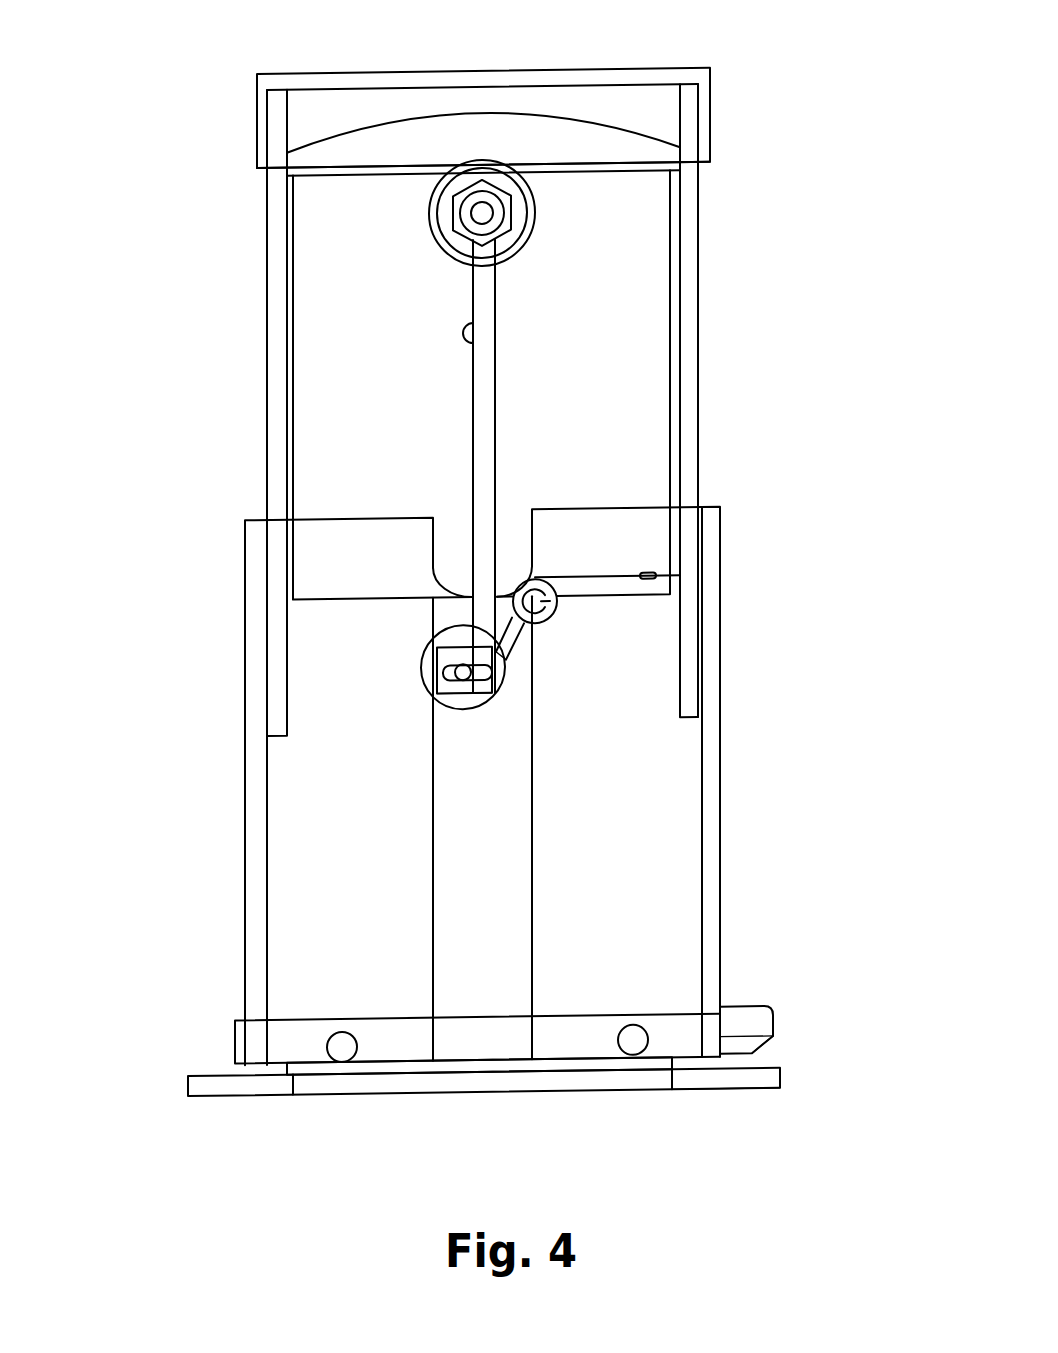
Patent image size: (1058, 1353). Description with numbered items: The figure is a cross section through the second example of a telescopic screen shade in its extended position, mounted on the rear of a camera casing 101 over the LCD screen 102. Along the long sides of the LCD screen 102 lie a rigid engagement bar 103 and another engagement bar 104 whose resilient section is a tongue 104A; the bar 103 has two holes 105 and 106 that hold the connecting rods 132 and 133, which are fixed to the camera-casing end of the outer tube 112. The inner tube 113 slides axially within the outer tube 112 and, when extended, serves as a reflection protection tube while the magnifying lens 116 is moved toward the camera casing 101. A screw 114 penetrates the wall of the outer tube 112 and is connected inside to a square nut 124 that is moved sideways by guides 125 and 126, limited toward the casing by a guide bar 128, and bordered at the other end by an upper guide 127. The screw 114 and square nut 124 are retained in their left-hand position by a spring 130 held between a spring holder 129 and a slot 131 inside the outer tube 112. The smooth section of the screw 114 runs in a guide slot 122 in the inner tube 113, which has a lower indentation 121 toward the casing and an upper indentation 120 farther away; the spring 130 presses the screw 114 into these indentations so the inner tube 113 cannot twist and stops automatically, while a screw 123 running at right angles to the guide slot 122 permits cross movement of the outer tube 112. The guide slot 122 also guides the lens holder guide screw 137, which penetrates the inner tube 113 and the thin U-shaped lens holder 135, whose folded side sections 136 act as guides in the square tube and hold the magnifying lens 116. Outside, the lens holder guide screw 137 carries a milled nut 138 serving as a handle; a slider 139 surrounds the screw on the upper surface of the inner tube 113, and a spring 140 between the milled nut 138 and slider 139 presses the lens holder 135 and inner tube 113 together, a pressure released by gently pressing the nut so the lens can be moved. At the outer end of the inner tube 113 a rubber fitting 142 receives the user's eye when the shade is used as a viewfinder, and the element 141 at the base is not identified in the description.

The camera casing 101 is at (720, 1082).
The LCD screen 102 is at (470, 1082).
The rigid engagement bar 103 is at (233, 1035).
The engagement bar 104 is at (648, 1041).
The tongue 104A is at (728, 1008).
The hole 105 is at (326, 1040).
The hole 106 is at (648, 1030).
The outer tube 112 is at (725, 557).
The inner tube 113 is at (700, 463).
The screw 114 is at (497, 684).
The magnifying lens 116 is at (600, 118).
The upper indentation 120 is at (462, 332).
The lower indentation 121 is at (430, 665).
The guide slot 122 is at (490, 355).
The screw 123 is at (440, 668).
The square nut 124 is at (485, 630).
The guide 125 is at (348, 948).
The guide 126 is at (602, 946).
The upper guide 127 is at (428, 597).
The guide bar 128 is at (508, 798).
The spring holder 129 is at (558, 601).
The spring 130 is at (632, 570).
The slot 131 is at (660, 578).
The connecting rod 132 is at (326, 1052).
The connecting rod 133 is at (776, 1047).
The lens holder 135 is at (378, 400).
The side sections 136 is at (262, 122).
The lens holder guide screw 137 is at (480, 202).
The milled nut 138 is at (428, 224).
The slider 139 is at (440, 205).
The spring 140 is at (455, 212).
The foot 141 is at (783, 1068).
The rubber fitting 142 is at (625, 68).